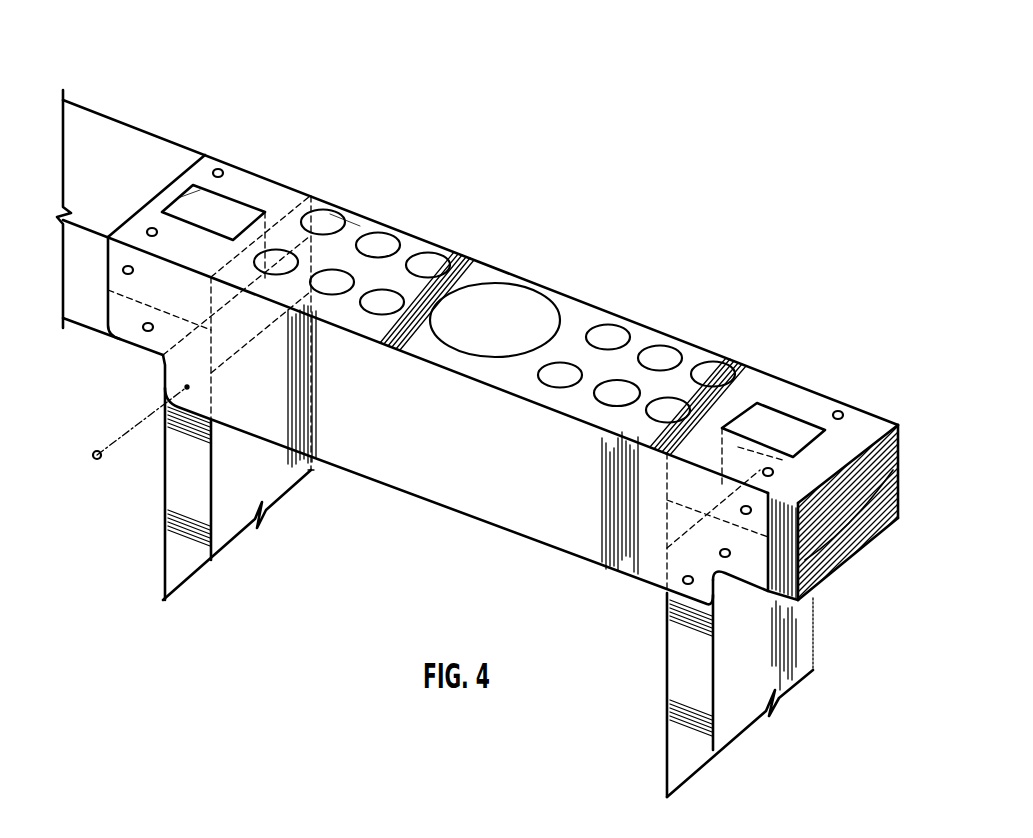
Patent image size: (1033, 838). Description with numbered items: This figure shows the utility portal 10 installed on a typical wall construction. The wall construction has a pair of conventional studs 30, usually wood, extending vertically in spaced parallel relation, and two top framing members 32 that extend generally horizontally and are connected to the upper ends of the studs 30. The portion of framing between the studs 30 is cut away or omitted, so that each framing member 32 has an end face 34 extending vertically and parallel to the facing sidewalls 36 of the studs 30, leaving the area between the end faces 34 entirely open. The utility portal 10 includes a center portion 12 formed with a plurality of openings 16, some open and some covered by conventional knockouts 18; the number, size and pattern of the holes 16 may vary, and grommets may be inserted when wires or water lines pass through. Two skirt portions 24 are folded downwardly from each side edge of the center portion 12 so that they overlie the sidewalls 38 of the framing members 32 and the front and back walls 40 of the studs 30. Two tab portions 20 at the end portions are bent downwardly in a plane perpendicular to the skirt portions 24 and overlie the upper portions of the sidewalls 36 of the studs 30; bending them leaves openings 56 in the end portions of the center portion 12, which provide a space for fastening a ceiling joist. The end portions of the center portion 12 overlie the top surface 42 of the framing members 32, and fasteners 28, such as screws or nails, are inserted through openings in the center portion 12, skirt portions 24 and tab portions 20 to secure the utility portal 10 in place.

The utility portal 10 is at (592, 226).
The center portion 12 is at (520, 383).
The openings 16 is at (380, 300).
The knockouts 18 is at (492, 312).
The tab portions 20 is at (285, 207).
The skirt portions 24 is at (242, 380).
The fasteners 28 is at (220, 250).
The studs 30 is at (168, 570).
The top framing members 32 is at (113, 127).
The end faces 34 is at (345, 222).
The facing sidewalls 36 is at (223, 492).
The sidewalls 38 is at (97, 110).
The front and back walls 40 is at (340, 237).
The top surface 42 is at (80, 113).
The openings 56 is at (190, 202).